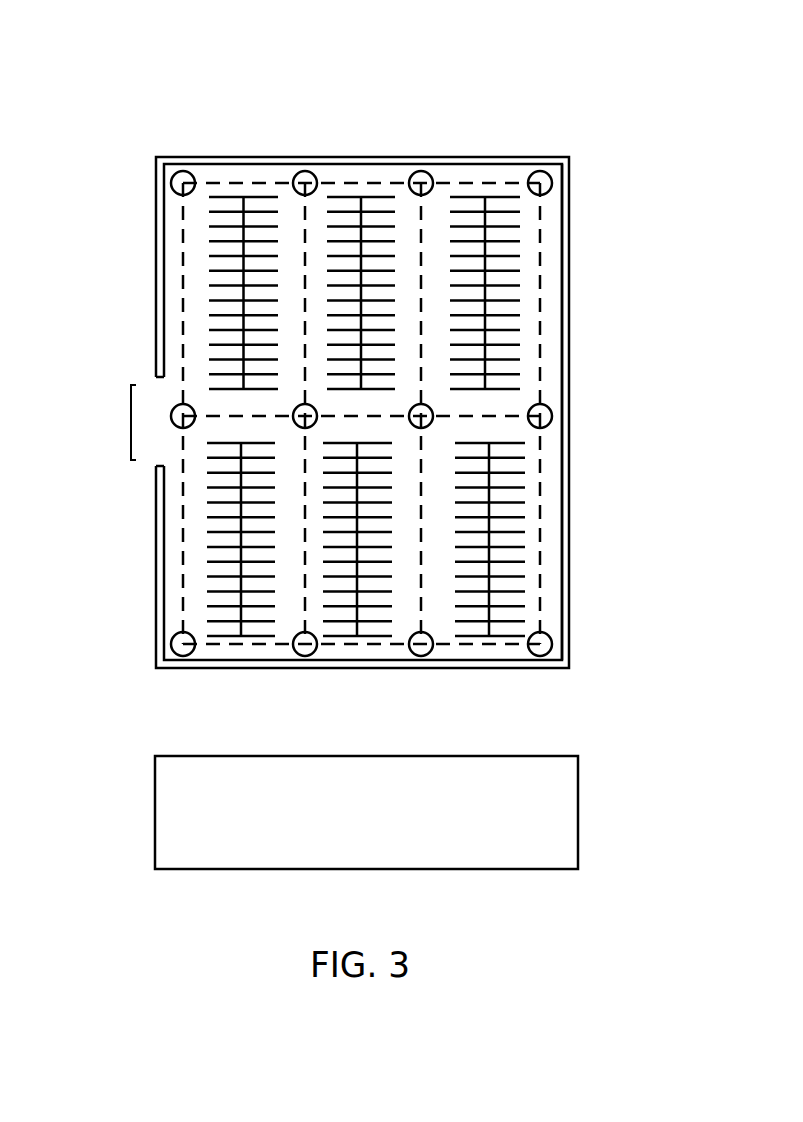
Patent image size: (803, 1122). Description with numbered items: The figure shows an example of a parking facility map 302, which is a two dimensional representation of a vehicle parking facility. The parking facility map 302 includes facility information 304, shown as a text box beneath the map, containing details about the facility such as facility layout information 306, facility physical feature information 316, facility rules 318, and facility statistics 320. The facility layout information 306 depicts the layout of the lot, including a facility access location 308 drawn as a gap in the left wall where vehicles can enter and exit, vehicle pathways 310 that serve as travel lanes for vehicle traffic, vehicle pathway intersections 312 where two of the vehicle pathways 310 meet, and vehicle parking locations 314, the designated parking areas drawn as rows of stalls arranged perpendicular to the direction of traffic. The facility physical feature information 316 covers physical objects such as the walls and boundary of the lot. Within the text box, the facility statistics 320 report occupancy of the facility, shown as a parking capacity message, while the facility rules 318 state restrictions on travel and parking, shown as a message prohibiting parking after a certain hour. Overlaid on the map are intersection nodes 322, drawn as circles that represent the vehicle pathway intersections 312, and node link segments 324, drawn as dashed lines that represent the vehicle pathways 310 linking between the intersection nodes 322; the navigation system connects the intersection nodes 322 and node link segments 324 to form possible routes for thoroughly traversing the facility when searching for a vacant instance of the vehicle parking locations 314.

The parking facility map 302 is at (175, 88).
The facility information 304 is at (155, 820).
The facility layout information 306 is at (452, 148).
The facility access locations 308 is at (130, 425).
The vehicle pathways 310 is at (565, 284).
The vehicle pathway intersections 312 is at (575, 415).
The vehicle parking locations 314 is at (530, 572).
The facility physical feature information 316 is at (503, 663).
The facility rules 318 is at (497, 823).
The facility statistics 320 is at (555, 793).
The intersection nodes 322 is at (181, 657).
The node link segments 324 is at (268, 647).